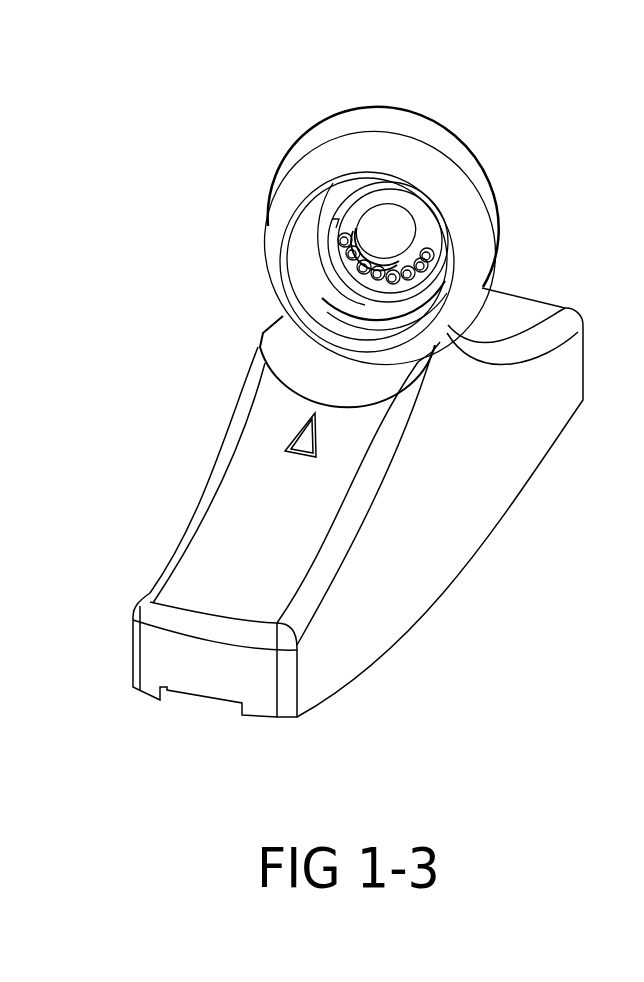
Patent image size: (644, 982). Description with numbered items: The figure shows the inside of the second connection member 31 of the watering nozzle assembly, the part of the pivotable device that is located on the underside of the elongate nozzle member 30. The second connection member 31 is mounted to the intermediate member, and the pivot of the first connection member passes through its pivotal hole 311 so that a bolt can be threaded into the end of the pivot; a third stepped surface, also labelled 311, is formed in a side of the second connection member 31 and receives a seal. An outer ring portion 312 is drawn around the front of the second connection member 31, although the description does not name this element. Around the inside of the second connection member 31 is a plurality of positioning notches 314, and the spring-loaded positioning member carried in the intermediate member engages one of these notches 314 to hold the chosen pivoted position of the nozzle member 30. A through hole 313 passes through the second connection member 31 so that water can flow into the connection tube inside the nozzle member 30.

The elongate nozzle member 30 is at (443, 480).
The second connection member 31 is at (432, 183).
The pivotal hole 311 is at (393, 236).
The outer ring 312 is at (277, 248).
The through hole 313 is at (367, 315).
The positioning notches 314 is at (352, 252).